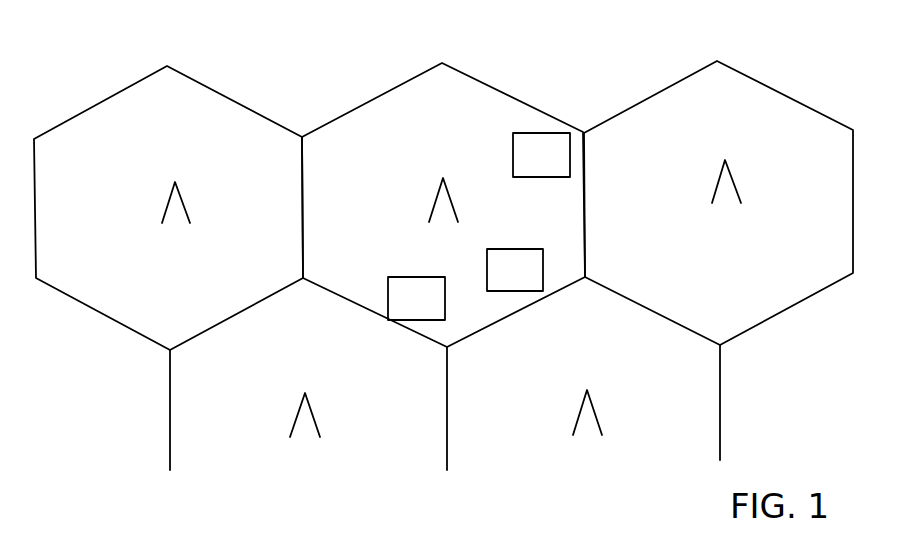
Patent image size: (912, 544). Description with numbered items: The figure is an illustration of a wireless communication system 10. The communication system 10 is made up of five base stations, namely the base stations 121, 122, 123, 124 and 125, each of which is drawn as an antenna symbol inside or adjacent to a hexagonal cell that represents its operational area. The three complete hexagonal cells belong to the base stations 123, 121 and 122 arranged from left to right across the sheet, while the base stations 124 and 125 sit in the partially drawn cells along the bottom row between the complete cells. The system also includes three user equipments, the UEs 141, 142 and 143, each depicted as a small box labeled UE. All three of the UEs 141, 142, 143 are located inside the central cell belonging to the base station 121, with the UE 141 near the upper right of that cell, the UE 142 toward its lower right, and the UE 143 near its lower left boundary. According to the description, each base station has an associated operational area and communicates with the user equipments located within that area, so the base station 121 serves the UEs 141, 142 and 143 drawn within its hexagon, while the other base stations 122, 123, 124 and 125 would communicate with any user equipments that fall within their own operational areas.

The wireless communication system 10 is at (726, 46).
The base station 121 is at (466, 200).
The base station 122 is at (749, 181).
The base station 123 is at (199, 202).
The base station 124 is at (328, 415).
The base station 125 is at (610, 412).
The user equipment 141 is at (515, 155).
The user equipment 142 is at (494, 260).
The user equipment 143 is at (403, 283).